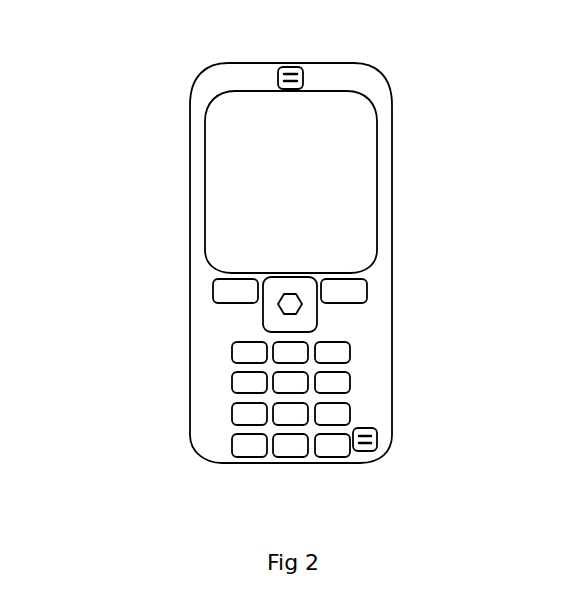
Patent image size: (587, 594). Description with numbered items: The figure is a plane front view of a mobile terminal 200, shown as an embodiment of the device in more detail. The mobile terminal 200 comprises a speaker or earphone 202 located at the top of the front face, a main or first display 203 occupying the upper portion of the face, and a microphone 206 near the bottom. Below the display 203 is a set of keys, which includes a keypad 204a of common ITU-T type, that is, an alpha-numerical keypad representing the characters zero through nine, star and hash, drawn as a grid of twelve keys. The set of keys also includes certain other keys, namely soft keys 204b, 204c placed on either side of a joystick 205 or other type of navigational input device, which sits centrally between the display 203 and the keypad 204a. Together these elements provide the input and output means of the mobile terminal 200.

The mobile terminal 200 is at (178, 118).
The speaker or earphone 202 is at (288, 66).
The main or first display 203 is at (392, 168).
The keypad 204a is at (232, 455).
The soft key 204b is at (213, 292).
The soft key 204c is at (367, 293).
The joystick 205 is at (317, 312).
The microphone 206 is at (376, 447).